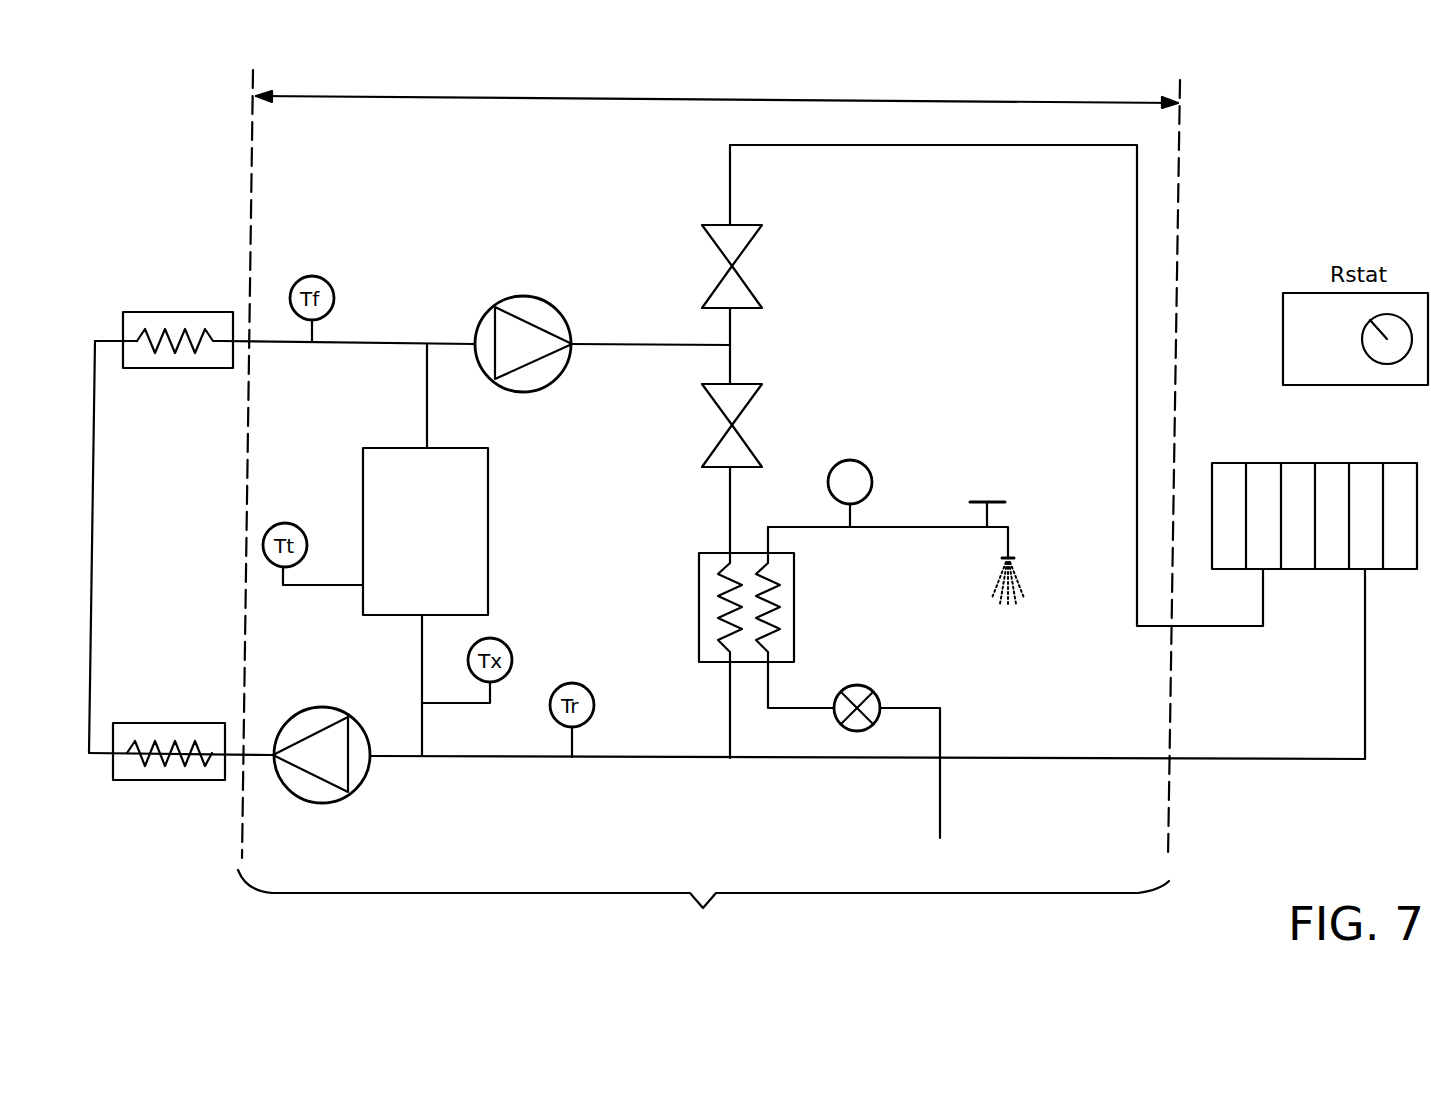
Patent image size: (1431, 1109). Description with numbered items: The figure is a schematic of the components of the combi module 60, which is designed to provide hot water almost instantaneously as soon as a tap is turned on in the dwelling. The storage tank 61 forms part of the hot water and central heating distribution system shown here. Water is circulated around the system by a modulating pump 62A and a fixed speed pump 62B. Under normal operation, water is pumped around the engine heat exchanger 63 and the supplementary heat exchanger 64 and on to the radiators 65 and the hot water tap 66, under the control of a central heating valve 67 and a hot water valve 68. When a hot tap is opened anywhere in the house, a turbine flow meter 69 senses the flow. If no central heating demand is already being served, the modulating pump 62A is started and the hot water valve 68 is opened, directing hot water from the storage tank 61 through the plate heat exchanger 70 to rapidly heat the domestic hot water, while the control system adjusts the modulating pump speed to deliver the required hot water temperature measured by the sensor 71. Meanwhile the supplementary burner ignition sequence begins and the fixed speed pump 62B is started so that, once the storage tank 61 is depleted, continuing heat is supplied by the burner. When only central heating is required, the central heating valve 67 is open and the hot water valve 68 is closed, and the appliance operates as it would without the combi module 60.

The combi module 60 is at (709, 503).
The storage tank 61 is at (488, 512).
The modulating pump 62A is at (556, 301).
The fixed speed pump 62B is at (356, 792).
The engine heat exchanger 63 is at (177, 780).
The supplementary heat exchanger 64 is at (187, 368).
The radiators 65 is at (1383, 569).
The hot water tap 66 is at (1008, 529).
The central heating valve 67 is at (703, 226).
The hot water valve 68 is at (762, 386).
The turbine flow meter 69 is at (848, 727).
The plate heat exchanger 70 is at (699, 603).
The sensor 71 is at (868, 466).